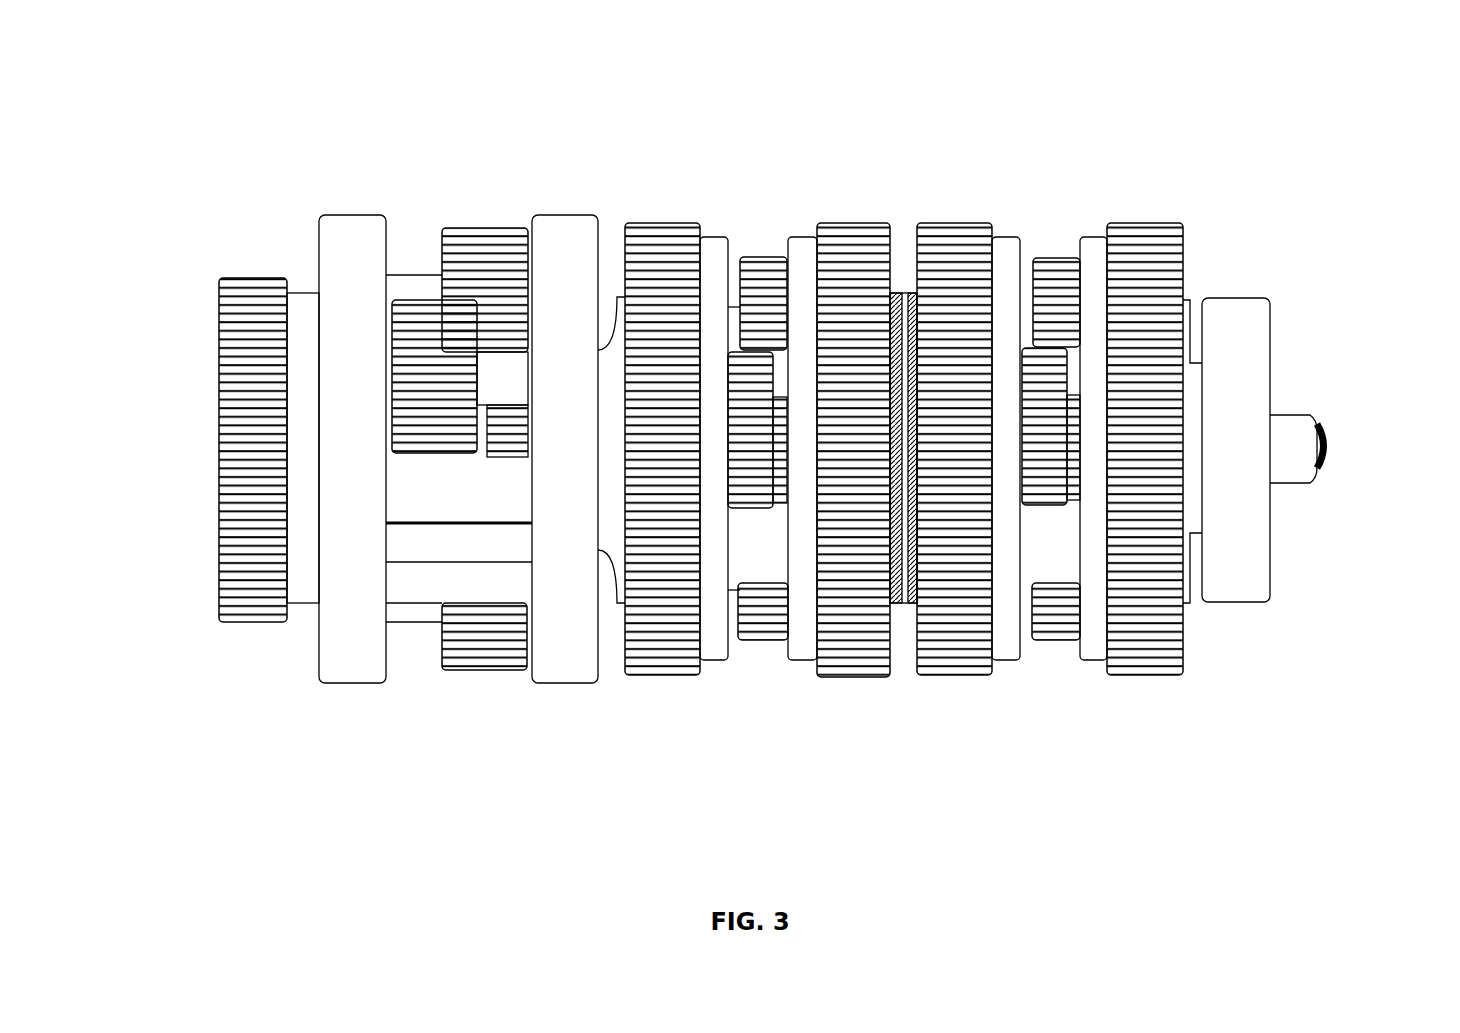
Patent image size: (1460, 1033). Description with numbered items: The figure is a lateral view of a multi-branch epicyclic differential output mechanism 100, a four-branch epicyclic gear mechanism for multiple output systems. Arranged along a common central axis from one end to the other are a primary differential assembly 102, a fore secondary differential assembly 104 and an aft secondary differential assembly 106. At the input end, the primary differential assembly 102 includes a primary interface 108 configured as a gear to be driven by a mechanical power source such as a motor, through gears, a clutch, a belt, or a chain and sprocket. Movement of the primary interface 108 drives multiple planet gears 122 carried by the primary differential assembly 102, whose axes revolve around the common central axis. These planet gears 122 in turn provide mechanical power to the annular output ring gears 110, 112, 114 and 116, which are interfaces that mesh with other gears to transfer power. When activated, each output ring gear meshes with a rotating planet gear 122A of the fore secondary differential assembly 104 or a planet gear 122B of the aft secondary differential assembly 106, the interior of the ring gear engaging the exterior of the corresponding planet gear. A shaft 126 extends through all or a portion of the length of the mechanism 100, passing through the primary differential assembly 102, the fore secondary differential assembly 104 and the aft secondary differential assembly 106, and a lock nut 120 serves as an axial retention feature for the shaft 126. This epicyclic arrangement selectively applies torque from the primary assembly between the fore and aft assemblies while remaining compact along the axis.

The multi-branch epicyclic differential output mechanism 100 is at (1262, 86).
The primary differential assembly 102 is at (360, 463).
The fore secondary differential assembly 104 is at (789, 484).
The aft secondary differential assembly 106 is at (1074, 484).
The primary interface 108 is at (213, 280).
The annular output ring gear 110 is at (663, 221).
The annular output ring gear 112 is at (836, 221).
The annular output ring gear 114 is at (963, 221).
The annular output ring gear 116 is at (1131, 221).
The lock nut 120 is at (1307, 413).
The planet gears 122 is at (402, 296).
The planet gear 122A is at (771, 649).
The planet gear 122B is at (1062, 649).
The shaft 126 is at (1329, 452).